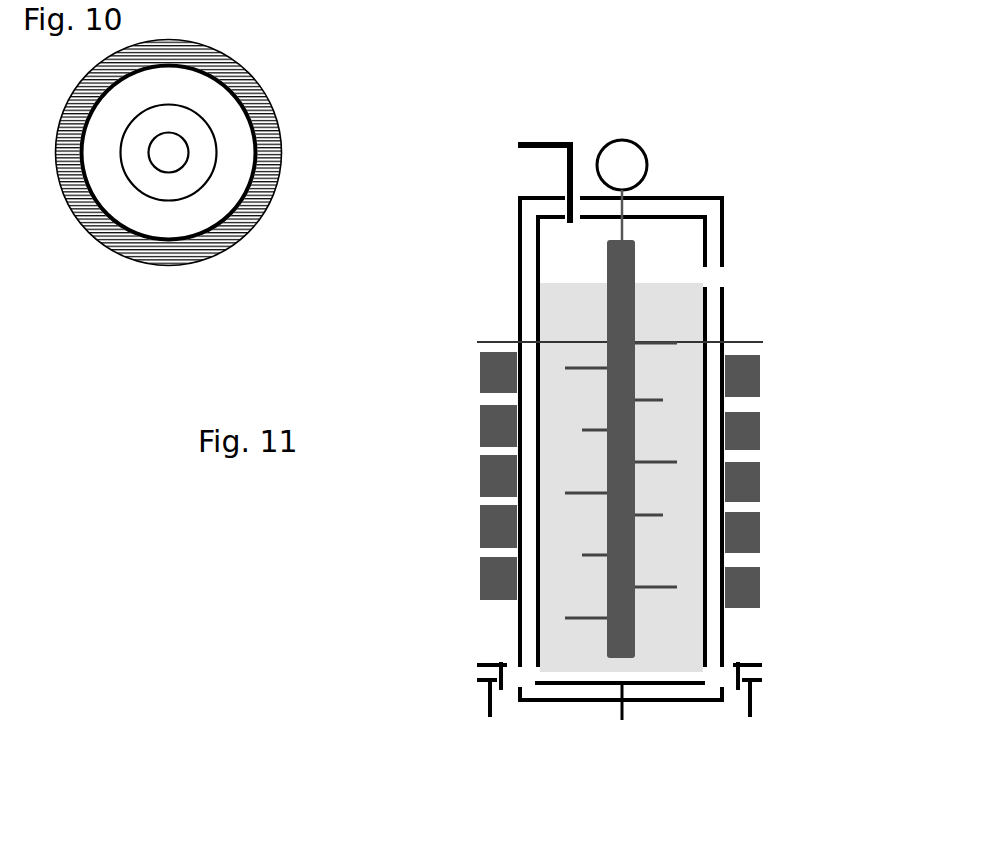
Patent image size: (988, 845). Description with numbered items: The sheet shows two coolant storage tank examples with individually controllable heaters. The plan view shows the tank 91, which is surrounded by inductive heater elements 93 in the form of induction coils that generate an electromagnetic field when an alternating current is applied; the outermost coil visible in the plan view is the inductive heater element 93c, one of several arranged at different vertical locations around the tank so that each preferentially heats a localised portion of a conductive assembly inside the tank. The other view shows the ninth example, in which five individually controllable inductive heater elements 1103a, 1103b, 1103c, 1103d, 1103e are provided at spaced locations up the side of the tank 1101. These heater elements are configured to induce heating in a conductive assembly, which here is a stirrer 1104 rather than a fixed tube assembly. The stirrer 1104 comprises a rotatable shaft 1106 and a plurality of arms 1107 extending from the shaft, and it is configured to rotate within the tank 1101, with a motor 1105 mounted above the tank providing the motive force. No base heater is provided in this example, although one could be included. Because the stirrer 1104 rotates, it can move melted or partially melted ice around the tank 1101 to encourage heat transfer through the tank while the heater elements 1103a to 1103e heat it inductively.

In FIG. 10, the tank 91 is at (128, 238).
In FIG. 10, the inductive heater elements 93 is at (216, 180).
In FIG. 10, the inductive heater element 93c is at (151, 257).
In FIG. 11, the tank 1101 is at (518, 633).
In FIG. 11, the inductive heater element 1103a is at (482, 582).
In FIG. 11, the inductive heater element 1103b is at (482, 523).
In FIG. 11, the inductive heater element 1103c is at (482, 470).
In FIG. 11, the inductive heater element 1103d is at (482, 425).
In FIG. 11, the inductive heater element 1103e is at (480, 378).
In FIG. 11, the stirrer 1104 is at (637, 439).
In FIG. 11, the motor 1105 is at (620, 133).
In FIG. 11, the rotatable shaft 1106 is at (624, 310).
In FIG. 11, the arms 1107 is at (644, 399).